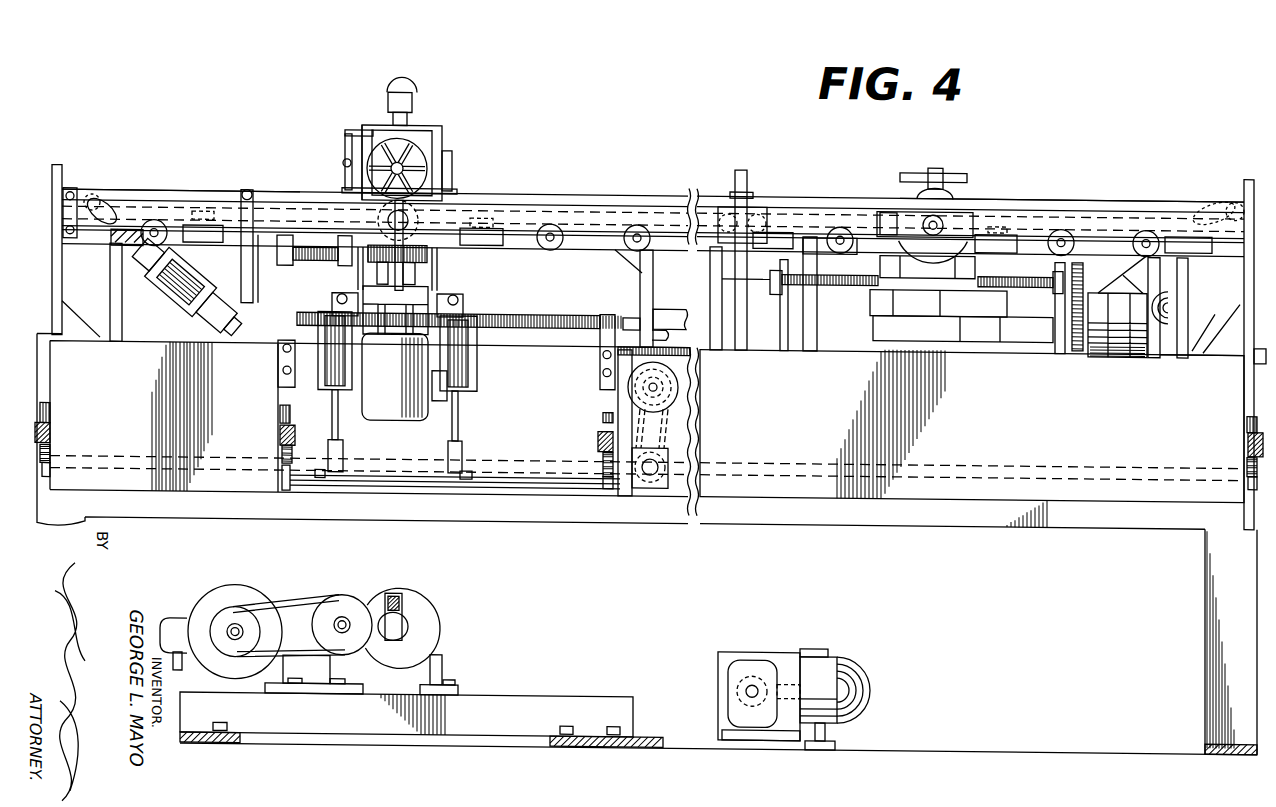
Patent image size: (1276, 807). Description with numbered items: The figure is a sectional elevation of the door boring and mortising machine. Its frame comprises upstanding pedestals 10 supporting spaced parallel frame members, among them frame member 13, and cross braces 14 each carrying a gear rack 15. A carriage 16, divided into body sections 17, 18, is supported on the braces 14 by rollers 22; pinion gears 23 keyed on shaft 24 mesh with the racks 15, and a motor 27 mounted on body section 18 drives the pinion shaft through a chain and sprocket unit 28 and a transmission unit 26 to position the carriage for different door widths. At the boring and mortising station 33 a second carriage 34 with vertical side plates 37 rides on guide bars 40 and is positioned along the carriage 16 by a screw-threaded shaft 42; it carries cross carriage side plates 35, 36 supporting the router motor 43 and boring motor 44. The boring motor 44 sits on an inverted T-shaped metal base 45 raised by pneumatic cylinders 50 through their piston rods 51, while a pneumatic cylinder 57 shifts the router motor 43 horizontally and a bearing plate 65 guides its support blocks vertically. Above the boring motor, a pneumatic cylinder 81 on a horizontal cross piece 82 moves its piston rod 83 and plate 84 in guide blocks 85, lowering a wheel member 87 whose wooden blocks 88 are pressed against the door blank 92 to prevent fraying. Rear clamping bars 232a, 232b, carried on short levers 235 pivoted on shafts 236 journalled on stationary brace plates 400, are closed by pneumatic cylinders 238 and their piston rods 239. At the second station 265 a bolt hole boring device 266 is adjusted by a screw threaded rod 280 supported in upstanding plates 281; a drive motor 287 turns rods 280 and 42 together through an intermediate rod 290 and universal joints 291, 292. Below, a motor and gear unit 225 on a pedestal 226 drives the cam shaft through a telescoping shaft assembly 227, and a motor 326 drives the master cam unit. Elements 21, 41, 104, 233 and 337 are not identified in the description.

The upstanding pedestals 10 is at (75, 521).
The frame member 13 is at (880, 518).
The cross braces 14 is at (50, 430).
The gear rack 15 is at (50, 453).
The carriage 16 is at (643, 143).
The body section 17 is at (210, 493).
The body section 18 is at (780, 491).
The bed plate 21 is at (470, 485).
The rollers 22 is at (50, 406).
The pinion gears 23 is at (50, 470).
The shaft 24 is at (800, 453).
The transmission unit 26 is at (665, 448).
The motor 27 is at (678, 380).
The chain and sprocket unit 28 is at (670, 418).
The boring and mortising station 33 is at (300, 124).
The second carriage 34 is at (445, 157).
The cross carriage side plate 35 is at (362, 268).
The cross carriage side plate 36 is at (440, 270).
The vertical side plates 37 is at (477, 343).
The guide bars 40 is at (543, 381).
The bracket 41 is at (280, 367).
The screw-threaded shaft 42 is at (585, 306).
The router motor 43 is at (457, 184).
The boring motor 44 is at (395, 377).
The inverted T-shaped metal base 45 is at (405, 446).
The pneumatic cylinders 50 is at (397, 326).
The piston rods 51 is at (458, 422).
The pneumatic cylinder 57 is at (307, 260).
The bearing plate 65 is at (432, 286).
The pneumatic cylinder 81 is at (413, 93).
The horizontal cross piece 82 is at (442, 118).
The piston rod 83 is at (403, 129).
The plate 84 is at (345, 150).
The vertical plastic guide blocks 85 is at (343, 162).
The wheel member 87 is at (375, 128).
The wooden blocks 88 is at (390, 76).
The door blanks 92 is at (200, 209).
The roller 104 is at (550, 227).
The motor and gear unit 225 is at (435, 598).
The pedestal 226 is at (595, 684).
The telescoping shaft assembly 227 is at (393, 590).
The rear clamping bar 232a is at (680, 225).
The rear clamping bar 232b is at (620, 187).
The post 233 is at (116, 272).
The short levers 235 is at (267, 177).
The shafts 236 is at (86, 193).
The pneumatic cylinders 238 is at (177, 298).
The piston rods 239 is at (115, 218).
The second station 265 is at (1003, 186).
The bolt hole boring device 266 is at (913, 177).
The screw threaded rod 280 is at (877, 280).
The upstanding plates 281 is at (812, 282).
The drive motor 287 is at (1097, 336).
The intermediate rod 290 is at (668, 307).
The universal joint 291 is at (656, 328).
The universal joint 292 is at (773, 272).
The motor 326 is at (877, 610).
The gear reducer 337 is at (760, 642).
The stationary brace plates 400 is at (1172, 345).